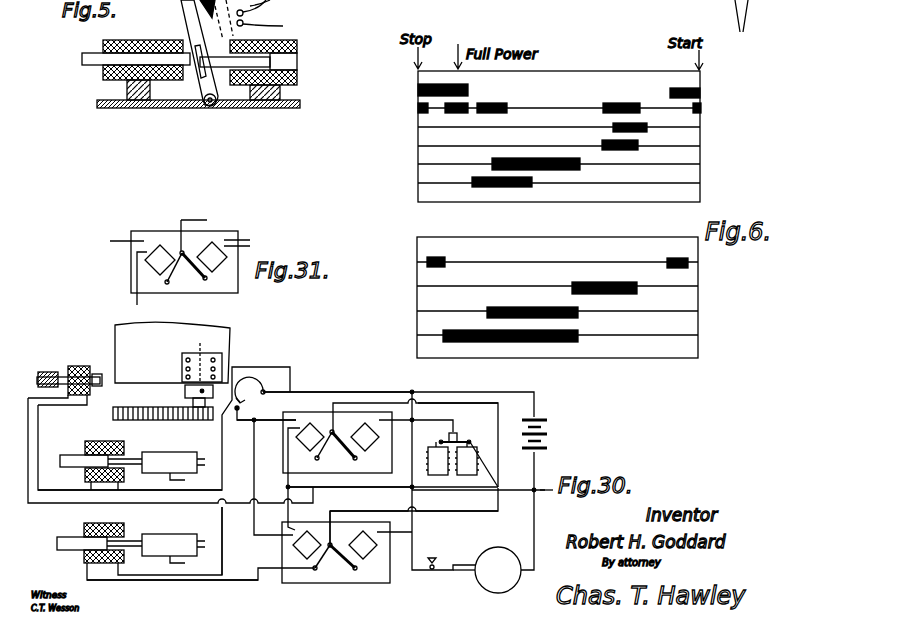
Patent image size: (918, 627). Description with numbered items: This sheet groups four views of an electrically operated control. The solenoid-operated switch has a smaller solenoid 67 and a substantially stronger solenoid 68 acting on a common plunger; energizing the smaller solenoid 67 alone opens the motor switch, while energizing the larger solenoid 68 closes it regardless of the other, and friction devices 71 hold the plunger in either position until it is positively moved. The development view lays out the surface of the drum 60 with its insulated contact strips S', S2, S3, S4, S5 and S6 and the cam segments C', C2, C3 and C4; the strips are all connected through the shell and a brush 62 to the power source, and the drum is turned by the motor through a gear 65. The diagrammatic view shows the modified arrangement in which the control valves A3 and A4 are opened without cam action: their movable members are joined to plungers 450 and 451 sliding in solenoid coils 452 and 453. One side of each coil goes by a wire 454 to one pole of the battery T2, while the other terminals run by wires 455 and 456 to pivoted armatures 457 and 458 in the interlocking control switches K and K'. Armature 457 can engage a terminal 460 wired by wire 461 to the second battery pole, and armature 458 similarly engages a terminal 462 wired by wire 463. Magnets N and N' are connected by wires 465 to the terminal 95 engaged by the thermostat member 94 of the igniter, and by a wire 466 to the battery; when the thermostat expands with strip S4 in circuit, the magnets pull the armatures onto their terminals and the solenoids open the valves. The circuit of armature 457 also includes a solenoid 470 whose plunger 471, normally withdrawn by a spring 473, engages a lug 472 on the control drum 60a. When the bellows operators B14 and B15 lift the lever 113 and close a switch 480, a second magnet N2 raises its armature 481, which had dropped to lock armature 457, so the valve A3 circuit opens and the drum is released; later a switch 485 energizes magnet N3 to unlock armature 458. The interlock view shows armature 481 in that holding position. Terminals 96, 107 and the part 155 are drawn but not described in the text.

In FIG. 5, the solenoid 67 is at (103, 73).
In FIG. 5, the solenoid 68 is at (297, 81).
In FIG. 5, the friction devices 71 is at (182, 82).
In FIG. 6, the contact strip S' is at (559, 86).
In FIG. 6, the contact strip S2 is at (500, 103).
In FIG. 6, the contact strip S3 is at (612, 124).
In FIG. 6, the contact strip S4 is at (630, 150).
In FIG. 6, the contact strip S5 is at (536, 156).
In FIG. 6, the contact strip S6 is at (520, 187).
In FIG. 6, the cam segment C' is at (557, 256).
In FIG. 6, the cam segment C2 is at (619, 280).
In FIG. 6, the cam segment C3 is at (535, 305).
In FIG. 6, the cam segment C4 is at (518, 342).
In FIG. 31, the magnet N is at (160, 260).
In FIG. 30, the magnet N is at (310, 437).
In FIG. 31, the second magnet N2 is at (212, 257).
In FIG. 30, the second magnet N2 is at (365, 437).
In FIG. 30, the magnet N' is at (307, 545).
In FIG. 30, the magnet N3 is at (363, 545).
In FIG. 31, the terminal 460 is at (180, 251).
In FIG. 30, the terminal 460 is at (334, 431).
In FIG. 31, the pivoted armature 457 is at (173, 286).
In FIG. 30, the pivoted armature 457 is at (320, 461).
In FIG. 31, the armature 481 is at (200, 281).
In FIG. 30, the armature 481 is at (356, 461).
In FIG. 30, the interlocking control switch K is at (337, 443).
In FIG. 30, the interlocking control switch K' is at (336, 553).
In FIG. 30, the terminal 462 is at (333, 543).
In FIG. 30, the pivoted armature 458 is at (316, 571).
In FIG. 30, the drum 60 is at (513, 589).
In FIG. 30, the control drum 60a is at (115, 333).
In FIG. 30, the brush 62 is at (462, 576).
In FIG. 30, the gear 65 is at (163, 405).
In FIG. 30, the thermostat member 94 is at (259, 389).
In FIG. 30, the terminal 95 is at (247, 409).
In FIG. 30, the terminal 96 is at (186, 481).
In FIG. 30, the terminal 107 is at (186, 564).
In FIG. 30, the lever 113 is at (444, 442).
In FIG. 30, the rivet plate 155 is at (186, 362).
In FIG. 30, the plunger 450 is at (72, 457).
In FIG. 30, the plunger 451 is at (68, 540).
In FIG. 30, the solenoid coil 452 is at (124, 450).
In FIG. 30, the solenoid coil 453 is at (114, 521).
In FIG. 30, the wire 454 is at (370, 392).
In FIG. 30, the wire 455 is at (171, 504).
In FIG. 30, the wire 456 is at (204, 582).
In FIG. 30, the wire 461 is at (432, 405).
In FIG. 30, the wire 463 is at (444, 512).
In FIG. 30, the wires 465 is at (273, 420).
In FIG. 30, the wire 466 is at (370, 489).
In FIG. 30, the solenoid 470 is at (84, 353).
In FIG. 30, the plunger 471 is at (98, 392).
In FIG. 30, the lug 472 is at (172, 352).
In FIG. 30, the spring 473 is at (66, 379).
In FIG. 30, the switch 480 is at (458, 436).
In FIG. 30, the switch 485 is at (436, 563).
In FIG. 30, the control valve A3 is at (173, 462).
In FIG. 30, the control valve A4 is at (173, 545).
In FIG. 30, the bellows operator B14 is at (436, 467).
In FIG. 30, the bellows operator B15 is at (467, 467).
In FIG. 30, the battery T2 is at (542, 425).